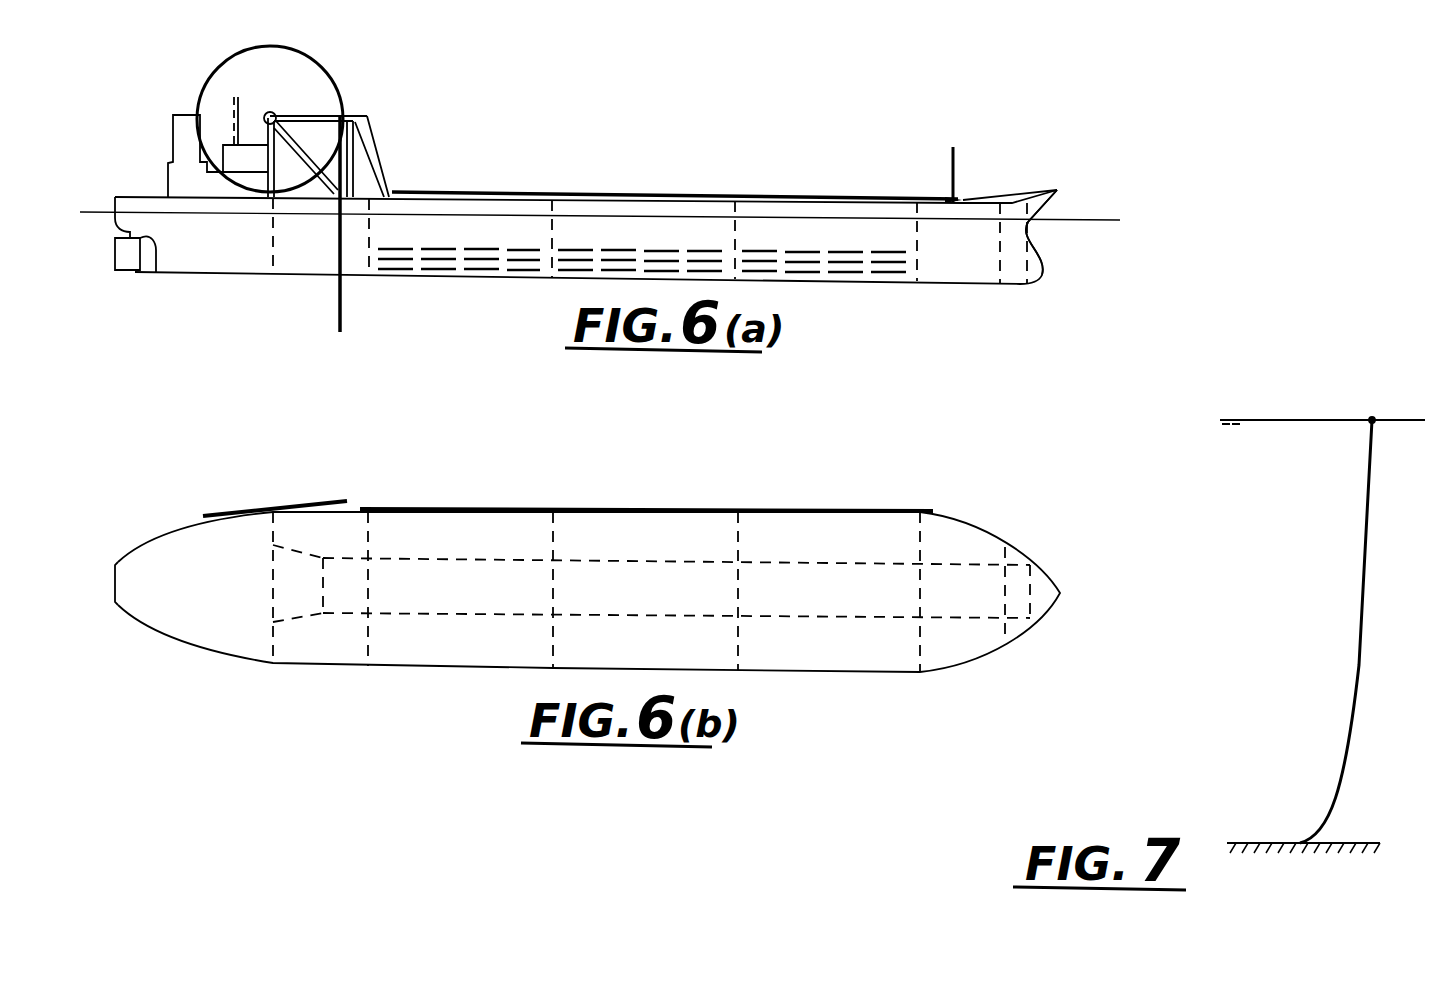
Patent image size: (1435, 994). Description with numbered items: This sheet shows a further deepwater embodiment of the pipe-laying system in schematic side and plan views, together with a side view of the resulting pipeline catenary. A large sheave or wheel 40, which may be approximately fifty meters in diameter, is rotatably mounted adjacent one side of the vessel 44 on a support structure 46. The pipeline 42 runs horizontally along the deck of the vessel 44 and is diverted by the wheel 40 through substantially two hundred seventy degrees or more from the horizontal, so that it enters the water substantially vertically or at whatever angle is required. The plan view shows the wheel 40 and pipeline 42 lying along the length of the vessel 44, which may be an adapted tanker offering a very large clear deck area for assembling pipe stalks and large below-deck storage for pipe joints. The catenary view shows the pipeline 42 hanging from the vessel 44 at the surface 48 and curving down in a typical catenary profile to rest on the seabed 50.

In FIG. 6A, the wheel 40 is at (308, 74).
In FIG. 6B, the wheel 40 is at (225, 511).
In FIG. 6A, the pipeline 42 is at (567, 192).
In FIG. 6B, the pipeline 42 is at (402, 507).
In FIG. 7, the pipeline 42 is at (1368, 527).
In FIG. 6A, the vessel 44 is at (1037, 190).
In FIG. 6B, the vessel 44 is at (989, 536).
In FIG. 7, the vessel 44 is at (1388, 419).
In FIG. 6A, the support structure 46 is at (363, 118).
In FIG. 7, the surface 48 is at (1305, 419).
In FIG. 7, the seabed 50 is at (1361, 842).